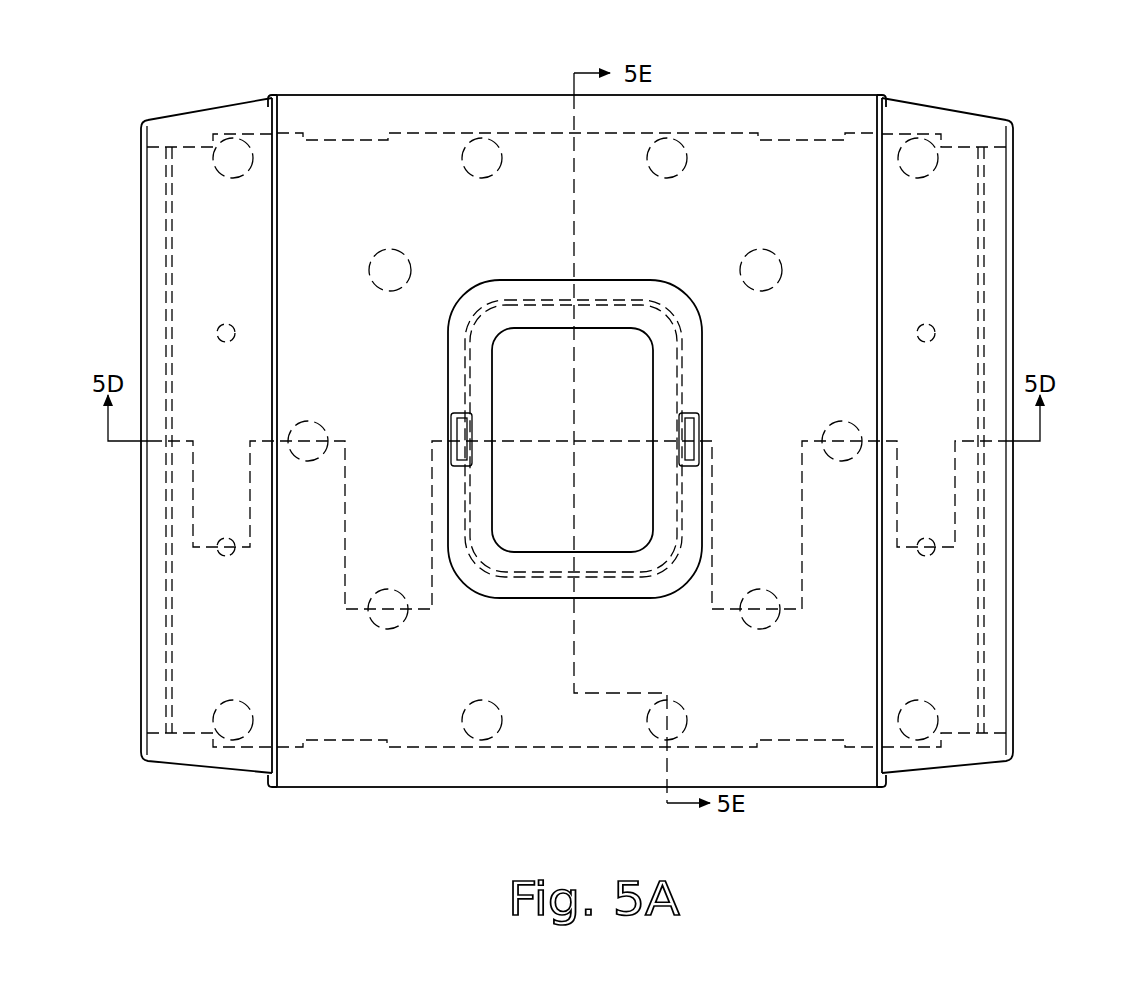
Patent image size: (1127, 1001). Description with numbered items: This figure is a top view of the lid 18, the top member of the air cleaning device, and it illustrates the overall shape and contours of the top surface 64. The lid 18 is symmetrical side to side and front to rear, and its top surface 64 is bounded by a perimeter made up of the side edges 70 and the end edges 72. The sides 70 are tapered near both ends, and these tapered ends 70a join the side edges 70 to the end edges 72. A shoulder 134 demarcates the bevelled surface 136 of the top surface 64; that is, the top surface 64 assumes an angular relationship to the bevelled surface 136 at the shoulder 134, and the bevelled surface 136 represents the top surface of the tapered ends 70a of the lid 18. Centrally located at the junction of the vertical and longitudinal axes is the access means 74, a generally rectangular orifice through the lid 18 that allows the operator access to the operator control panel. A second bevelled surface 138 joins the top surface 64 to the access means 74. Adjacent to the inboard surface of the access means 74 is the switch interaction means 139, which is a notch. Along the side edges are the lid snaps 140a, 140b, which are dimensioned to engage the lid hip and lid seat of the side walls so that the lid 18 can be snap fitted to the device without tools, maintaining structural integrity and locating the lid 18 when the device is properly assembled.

The lid 18 is at (1040, 220).
The top surface 64 is at (343, 375).
The side edges 70 is at (444, 95).
The tapered ends 70a is at (203, 116).
The end edges 72 is at (141, 262).
The access means 74 is at (521, 398).
The shoulder 134 is at (268, 95).
The bevelled surface 136 is at (202, 399).
The second bevelled surface 138 is at (676, 308).
The switch interaction means 139 is at (697, 425).
The lid snap 140a is at (367, 749).
The lid snap 140b is at (805, 134).